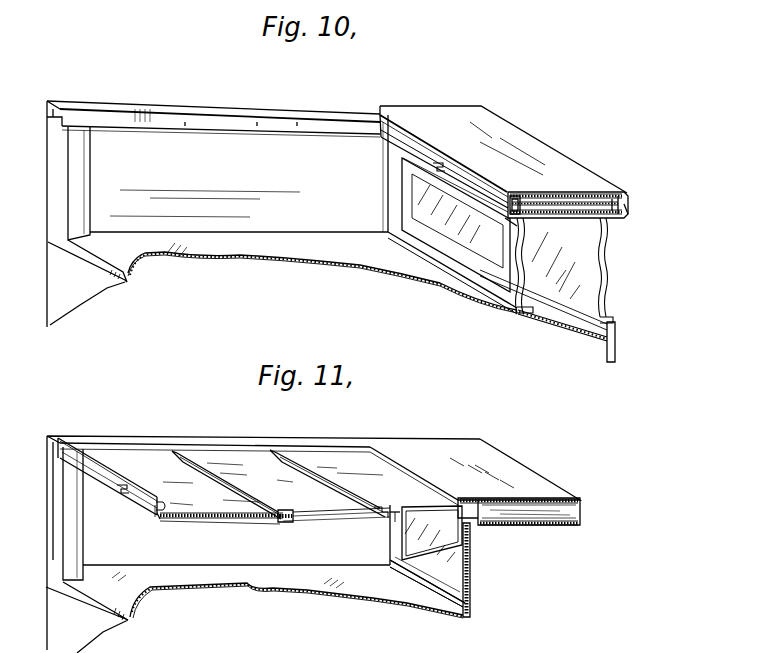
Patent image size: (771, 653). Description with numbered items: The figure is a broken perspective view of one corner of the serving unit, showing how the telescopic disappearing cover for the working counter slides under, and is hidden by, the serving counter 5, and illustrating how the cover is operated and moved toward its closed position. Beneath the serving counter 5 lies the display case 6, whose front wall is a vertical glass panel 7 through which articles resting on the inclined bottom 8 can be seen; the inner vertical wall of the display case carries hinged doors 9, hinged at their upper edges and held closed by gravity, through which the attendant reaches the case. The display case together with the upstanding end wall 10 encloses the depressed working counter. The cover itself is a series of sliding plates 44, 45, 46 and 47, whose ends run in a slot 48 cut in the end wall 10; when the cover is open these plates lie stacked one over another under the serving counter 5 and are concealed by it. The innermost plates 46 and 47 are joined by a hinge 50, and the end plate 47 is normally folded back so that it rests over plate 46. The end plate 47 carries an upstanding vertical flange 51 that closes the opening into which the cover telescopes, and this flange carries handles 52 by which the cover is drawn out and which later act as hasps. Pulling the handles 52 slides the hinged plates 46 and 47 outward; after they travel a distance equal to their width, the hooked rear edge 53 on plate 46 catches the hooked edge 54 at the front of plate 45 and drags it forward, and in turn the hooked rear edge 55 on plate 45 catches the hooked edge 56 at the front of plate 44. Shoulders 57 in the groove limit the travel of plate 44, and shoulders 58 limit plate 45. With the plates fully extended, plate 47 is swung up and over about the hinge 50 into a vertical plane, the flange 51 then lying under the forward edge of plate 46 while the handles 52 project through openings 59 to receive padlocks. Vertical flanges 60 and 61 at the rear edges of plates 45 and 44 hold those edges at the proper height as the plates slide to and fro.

In FIG. 10, the serving counter 5 is at (508, 144).
In FIG. 11, the serving counter 5 is at (505, 470).
In FIG. 10, the display case 6 is at (570, 263).
In FIG. 10, the vertical glass panel 7 is at (602, 289).
In FIG. 10, the inclined bottom 8 is at (560, 330).
In FIG. 10, the hinged doors 9 is at (433, 245).
In FIG. 11, the hinged doors 9 is at (423, 575).
In FIG. 10, the end wall 10 is at (248, 104).
In FIG. 11, the end wall 10 is at (228, 438).
In FIG. 10, the sliding plate 44 is at (607, 186).
In FIG. 11, the sliding plate 44 is at (446, 507).
In FIG. 10, the sliding plate 45 is at (612, 194).
In FIG. 11, the sliding plate 45 is at (349, 512).
In FIG. 10, the sliding plate 46 is at (560, 220).
In FIG. 11, the sliding plate 46 is at (270, 520).
In FIG. 10, the end plate 47 is at (577, 220).
In FIG. 11, the end plate 47 is at (212, 496).
In FIG. 10, the slot 48 is at (257, 122).
In FIG. 10, the hinge 50 is at (510, 220).
In FIG. 11, the hinge 50 is at (158, 518).
In FIG. 10, the upstanding vertical flange 51 is at (388, 118).
In FIG. 11, the upstanding vertical flange 51 is at (78, 452).
In FIG. 10, the handles 52 is at (437, 163).
In FIG. 11, the handles 52 is at (120, 489).
In FIG. 10, the hooked rear edge 53 is at (610, 217).
In FIG. 11, the hooked rear edge 53 is at (296, 522).
In FIG. 10, the hooked edge 54 is at (540, 193).
In FIG. 11, the hooked edge 54 is at (285, 510).
In FIG. 10, the hooked rear edge 55 is at (620, 196).
In FIG. 11, the hooked rear edge 55 is at (392, 518).
In FIG. 10, the hooked edge 56 is at (526, 205).
In FIG. 11, the hooked edge 56 is at (376, 510).
In FIG. 10, the shoulders 57 is at (297, 122).
In FIG. 11, the shoulders 57 is at (272, 450).
In FIG. 10, the shoulders 58 is at (185, 122).
In FIG. 11, the shoulders 58 is at (165, 448).
In FIG. 11, the openings 59 is at (168, 508).
In FIG. 10, the vertical flange 60 is at (625, 209).
In FIG. 11, the vertical flange 60 is at (393, 528).
In FIG. 10, the vertical flange 61 is at (628, 201).
In FIG. 11, the vertical flange 61 is at (518, 525).